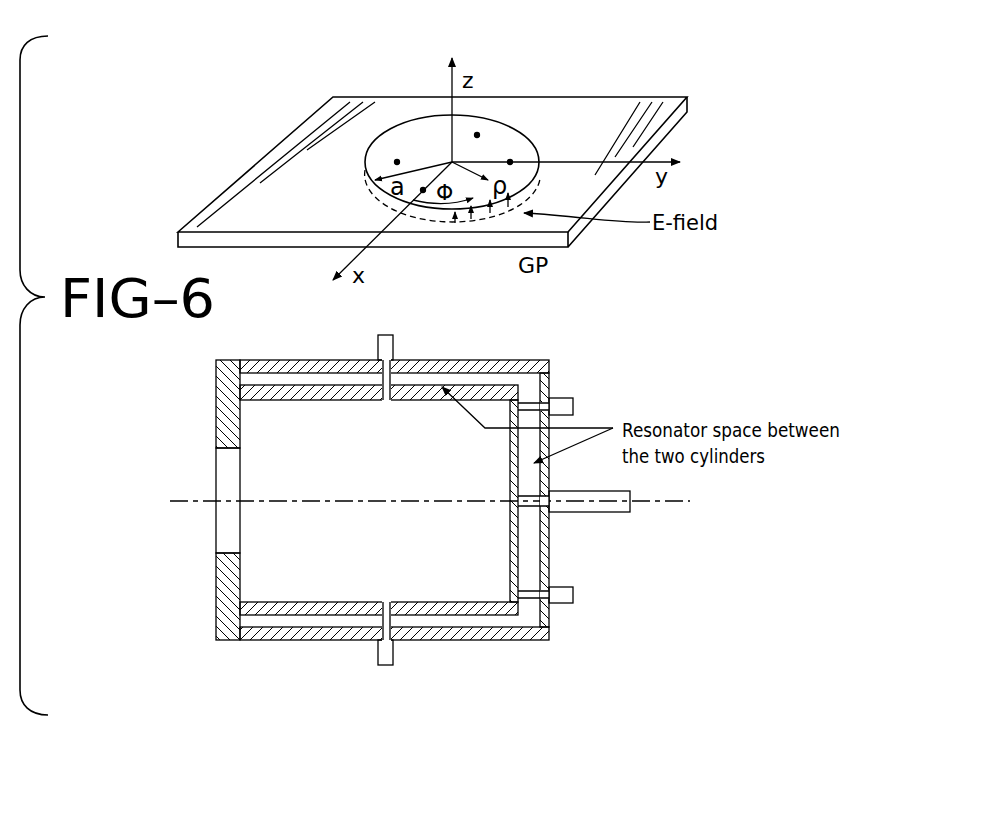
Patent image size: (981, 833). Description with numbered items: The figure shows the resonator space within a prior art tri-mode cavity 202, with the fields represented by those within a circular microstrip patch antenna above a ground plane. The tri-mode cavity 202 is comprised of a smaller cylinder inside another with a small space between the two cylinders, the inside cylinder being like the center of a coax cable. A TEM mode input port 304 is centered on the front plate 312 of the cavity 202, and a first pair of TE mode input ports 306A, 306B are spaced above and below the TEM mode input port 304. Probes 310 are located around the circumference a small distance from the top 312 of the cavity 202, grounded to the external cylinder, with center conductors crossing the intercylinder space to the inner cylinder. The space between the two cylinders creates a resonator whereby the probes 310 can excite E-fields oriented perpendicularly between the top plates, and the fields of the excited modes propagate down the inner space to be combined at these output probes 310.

The tri-mode cavity 202 is at (451, 464).
The probes 310 is at (388, 335).
The TE mode input port 306A is at (563, 398).
The TE mode input port 306B is at (560, 605).
The TEM mode input port 304 is at (598, 513).
The front plate 312 is at (547, 549).